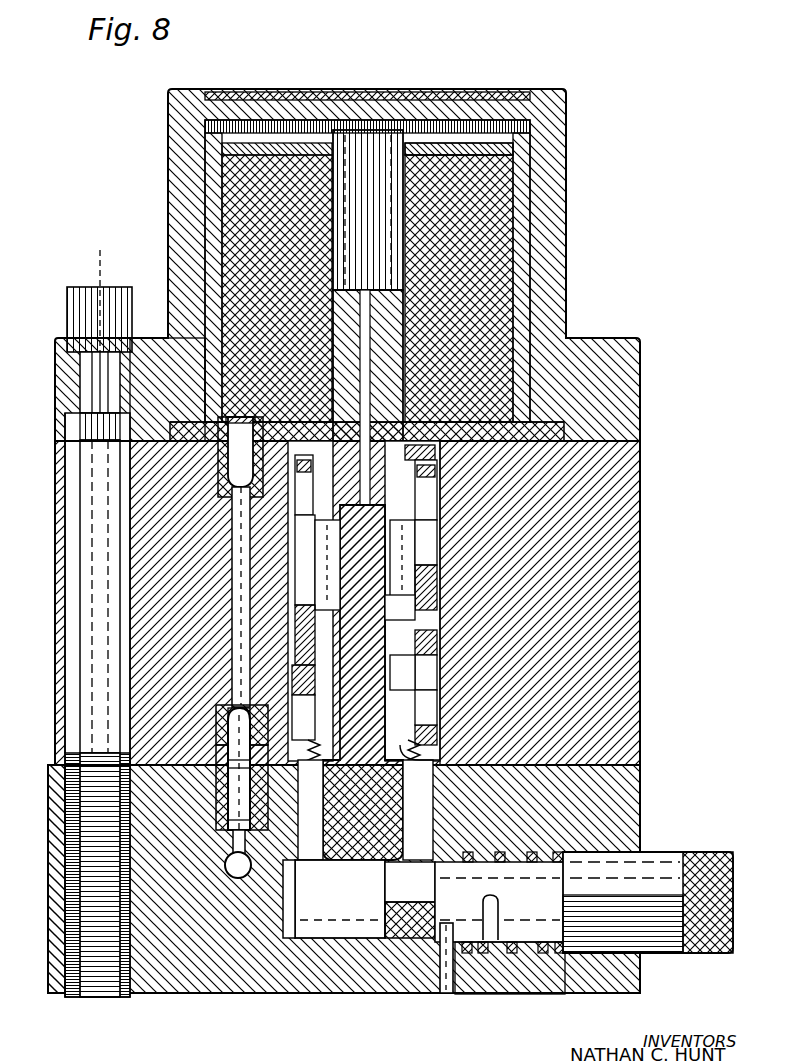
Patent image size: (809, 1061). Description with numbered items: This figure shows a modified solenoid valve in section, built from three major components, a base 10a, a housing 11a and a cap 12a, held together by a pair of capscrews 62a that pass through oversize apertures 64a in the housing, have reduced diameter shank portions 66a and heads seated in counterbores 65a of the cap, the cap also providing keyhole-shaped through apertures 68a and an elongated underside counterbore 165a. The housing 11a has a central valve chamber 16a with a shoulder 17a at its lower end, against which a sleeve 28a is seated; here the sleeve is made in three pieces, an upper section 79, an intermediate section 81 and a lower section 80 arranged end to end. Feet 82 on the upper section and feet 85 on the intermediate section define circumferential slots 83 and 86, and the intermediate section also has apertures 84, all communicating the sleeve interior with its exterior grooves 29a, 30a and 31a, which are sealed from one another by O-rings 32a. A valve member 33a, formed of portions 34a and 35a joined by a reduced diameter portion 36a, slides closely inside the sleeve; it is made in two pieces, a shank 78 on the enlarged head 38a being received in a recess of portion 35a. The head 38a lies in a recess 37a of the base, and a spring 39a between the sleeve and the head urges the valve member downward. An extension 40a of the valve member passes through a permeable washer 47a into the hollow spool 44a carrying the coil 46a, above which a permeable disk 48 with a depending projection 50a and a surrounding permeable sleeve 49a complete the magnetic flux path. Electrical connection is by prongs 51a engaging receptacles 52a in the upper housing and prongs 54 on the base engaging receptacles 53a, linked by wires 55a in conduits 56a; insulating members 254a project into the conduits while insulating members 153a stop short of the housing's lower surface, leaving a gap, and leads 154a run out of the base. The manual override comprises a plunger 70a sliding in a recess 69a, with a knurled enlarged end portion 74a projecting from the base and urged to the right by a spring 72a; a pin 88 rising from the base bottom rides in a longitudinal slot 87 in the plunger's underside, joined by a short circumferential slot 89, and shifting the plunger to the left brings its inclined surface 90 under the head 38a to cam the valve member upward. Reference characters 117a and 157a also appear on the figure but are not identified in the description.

The base 10a is at (192, 995).
The housing 11a is at (648, 449).
The cap 12a is at (168, 116).
The valve chamber 16a is at (540, 597).
The shoulder 17a is at (340, 870).
The sleeve 28a is at (440, 472).
The annular groove 29a is at (440, 505).
The annular groove 30a is at (437, 590).
The annular groove 31a is at (437, 708).
The O-rings 32a is at (437, 645).
The valve member 33a is at (400, 618).
The valve member portion 34a is at (437, 545).
The valve member portion 35a is at (437, 672).
The reduced diameter portion 36a is at (295, 560).
The recess 37a is at (405, 940).
The enlarged head 38a is at (360, 900).
The spring 39a is at (290, 850).
The valve member extension 40a is at (408, 312).
The dielectric hollow spool 44a is at (455, 148).
The coil 46a is at (490, 222).
The washer 47a is at (500, 430).
The disk 48 is at (498, 120).
The permeable sleeve 49a is at (212, 202).
The projection 50a is at (370, 130).
The prongs 51a is at (200, 441).
The receptacles 52a is at (130, 475).
The receptacles 53a is at (228, 740).
The prongs 54 is at (228, 770).
The wire 55a is at (65, 640).
The connecting conduit 56a is at (122, 570).
The capscrews 62a is at (80, 665).
The oversize apertures 64a is at (75, 543).
The counterbores 65a is at (90, 345).
The reduced diameter shank portion 66a is at (84, 372).
The keyhole aperture 68a is at (85, 425).
The recess 69a is at (330, 938).
The plunger 70a is at (700, 850).
The spring 72a is at (520, 953).
The enlarged diameter end portion 74a is at (705, 935).
The shank 78 is at (295, 630).
The upper section 79 is at (300, 440).
The lower section 80 is at (440, 755).
The intermediate section 81 is at (292, 680).
The feet 82 is at (440, 535).
The slots 83 is at (295, 470).
The apertures 84 is at (320, 600).
The feet 85 is at (415, 688).
The slots 86 is at (292, 720).
The longitudinal slot 87 is at (472, 992).
The pin 88 is at (447, 993).
The circumferential slot 89 is at (498, 900).
The inclined surface 90 is at (375, 880).
The cover plate 117a is at (270, 92).
The insulating members 153a is at (130, 768).
The leads 154a is at (228, 790).
The shoulder 157a is at (185, 420).
The elongated counterbore 165a is at (117, 331).
The insulating members 254a is at (58, 800).